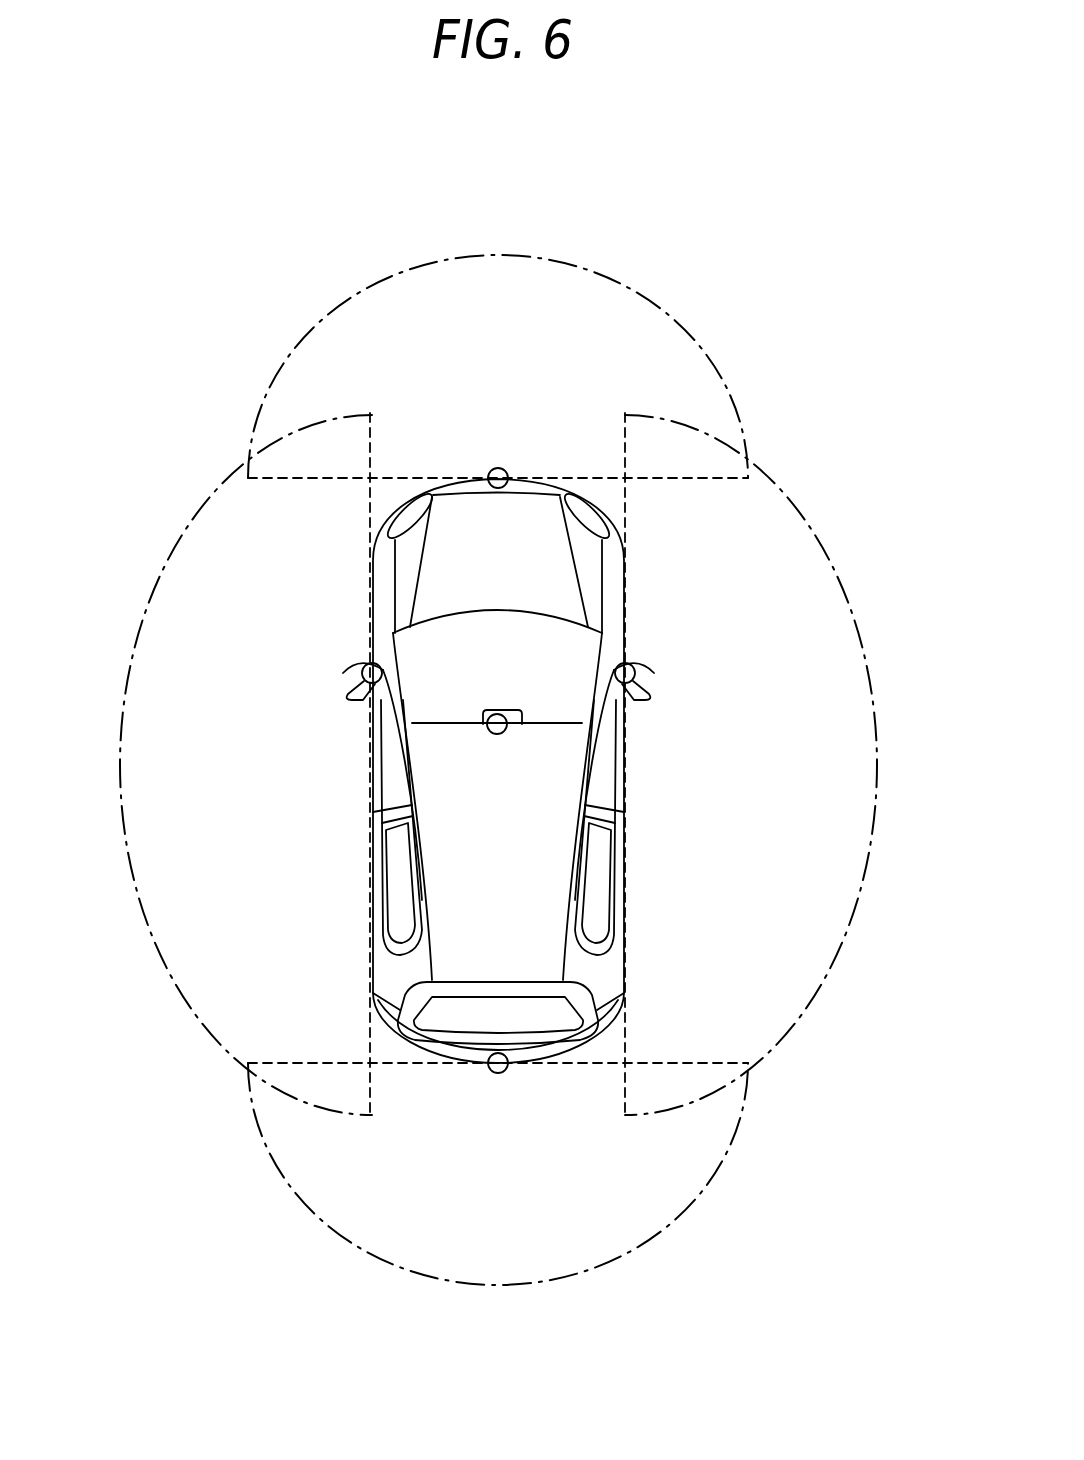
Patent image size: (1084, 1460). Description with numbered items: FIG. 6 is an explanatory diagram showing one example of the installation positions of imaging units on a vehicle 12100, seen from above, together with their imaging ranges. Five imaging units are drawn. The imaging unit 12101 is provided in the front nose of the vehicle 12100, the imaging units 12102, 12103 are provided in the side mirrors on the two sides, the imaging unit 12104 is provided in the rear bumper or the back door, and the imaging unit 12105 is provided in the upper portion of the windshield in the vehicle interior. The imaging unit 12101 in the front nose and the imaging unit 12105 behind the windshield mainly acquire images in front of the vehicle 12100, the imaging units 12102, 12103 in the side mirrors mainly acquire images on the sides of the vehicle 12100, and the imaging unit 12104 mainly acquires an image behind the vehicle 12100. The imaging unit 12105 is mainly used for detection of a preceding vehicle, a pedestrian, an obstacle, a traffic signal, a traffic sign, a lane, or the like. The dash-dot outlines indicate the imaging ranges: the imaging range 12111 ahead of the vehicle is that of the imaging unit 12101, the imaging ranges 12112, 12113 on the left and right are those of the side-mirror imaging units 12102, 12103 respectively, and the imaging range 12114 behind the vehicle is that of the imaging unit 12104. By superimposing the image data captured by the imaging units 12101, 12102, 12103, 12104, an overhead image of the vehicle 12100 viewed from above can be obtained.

The vehicle 12100 is at (383, 592).
The imaging unit 12101 is at (497, 468).
The imaging unit 12102 is at (361, 673).
The imaging unit 12103 is at (636, 673).
The imaging unit 12104 is at (497, 1074).
The imaging unit 12105 is at (503, 732).
The imaging range 12111 is at (497, 255).
The imaging range 12112 is at (178, 540).
The imaging range 12113 is at (820, 543).
The imaging range 12114 is at (497, 1286).